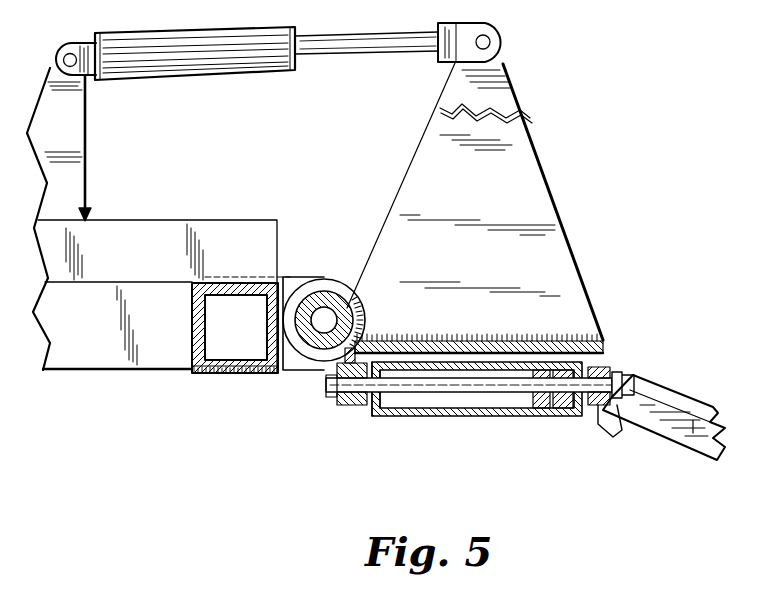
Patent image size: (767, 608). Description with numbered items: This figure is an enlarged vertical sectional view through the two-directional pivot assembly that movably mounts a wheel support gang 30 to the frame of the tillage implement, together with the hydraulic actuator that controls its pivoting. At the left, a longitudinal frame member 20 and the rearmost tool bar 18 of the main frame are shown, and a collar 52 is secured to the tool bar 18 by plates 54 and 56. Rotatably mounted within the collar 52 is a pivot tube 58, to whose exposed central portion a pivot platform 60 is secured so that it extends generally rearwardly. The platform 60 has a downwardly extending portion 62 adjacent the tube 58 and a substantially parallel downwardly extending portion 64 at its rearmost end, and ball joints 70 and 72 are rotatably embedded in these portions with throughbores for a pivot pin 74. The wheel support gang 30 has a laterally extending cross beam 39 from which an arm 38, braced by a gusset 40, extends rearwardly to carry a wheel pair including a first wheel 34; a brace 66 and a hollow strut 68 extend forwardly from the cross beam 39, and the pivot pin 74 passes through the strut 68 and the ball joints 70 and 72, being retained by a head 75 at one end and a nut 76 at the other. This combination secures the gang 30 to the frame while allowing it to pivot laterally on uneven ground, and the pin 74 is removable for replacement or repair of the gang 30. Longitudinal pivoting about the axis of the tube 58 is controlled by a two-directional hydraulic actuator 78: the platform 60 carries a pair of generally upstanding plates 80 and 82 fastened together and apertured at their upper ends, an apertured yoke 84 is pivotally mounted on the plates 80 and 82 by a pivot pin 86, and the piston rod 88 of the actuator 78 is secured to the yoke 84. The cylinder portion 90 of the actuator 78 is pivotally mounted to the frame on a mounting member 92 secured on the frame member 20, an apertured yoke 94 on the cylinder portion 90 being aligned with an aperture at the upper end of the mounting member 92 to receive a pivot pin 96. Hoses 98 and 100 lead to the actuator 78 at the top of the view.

The tool bar 18 is at (192, 316).
The longitudinal frame member 20 is at (124, 228).
The wheel support gang 30 is at (590, 268).
The first wheel 34 is at (0, 556).
The arm 38 is at (699, 404).
The cross beam 39 is at (556, 416).
The gusset 40 is at (692, 434).
The collar 52 is at (305, 352).
The plate 54 is at (237, 375).
The plate 56 is at (299, 278).
The pivot tube 58 is at (360, 318).
The pivot platform 60 is at (495, 340).
The downwardly extending portion 62 is at (348, 406).
The downwardly extending portion 64 is at (610, 420).
The brace 66 is at (374, 416).
The strut 68 is at (482, 416).
The ball joint 70 is at (342, 405).
The ball joint 72 is at (606, 370).
The pivot pin 74 is at (512, 393).
The head 75 is at (336, 392).
The nut 76 is at (628, 376).
The two-directional hydraulic actuator 78 is at (268, 74).
The upstanding plate 80 is at (503, 80).
The upstanding plate 82 is at (548, 204).
The yoke 84 is at (452, 62).
The pivot pin 86 is at (490, 42).
The piston rod 88 is at (355, 54).
The cylinder portion 90 is at (199, 69).
The mounting member 92 is at (90, 218).
The yoke 94 is at (92, 74).
The pivot pin 96 is at (63, 58).
The hose 98 is at (100, 0).
The hose 100 is at (52, 2).